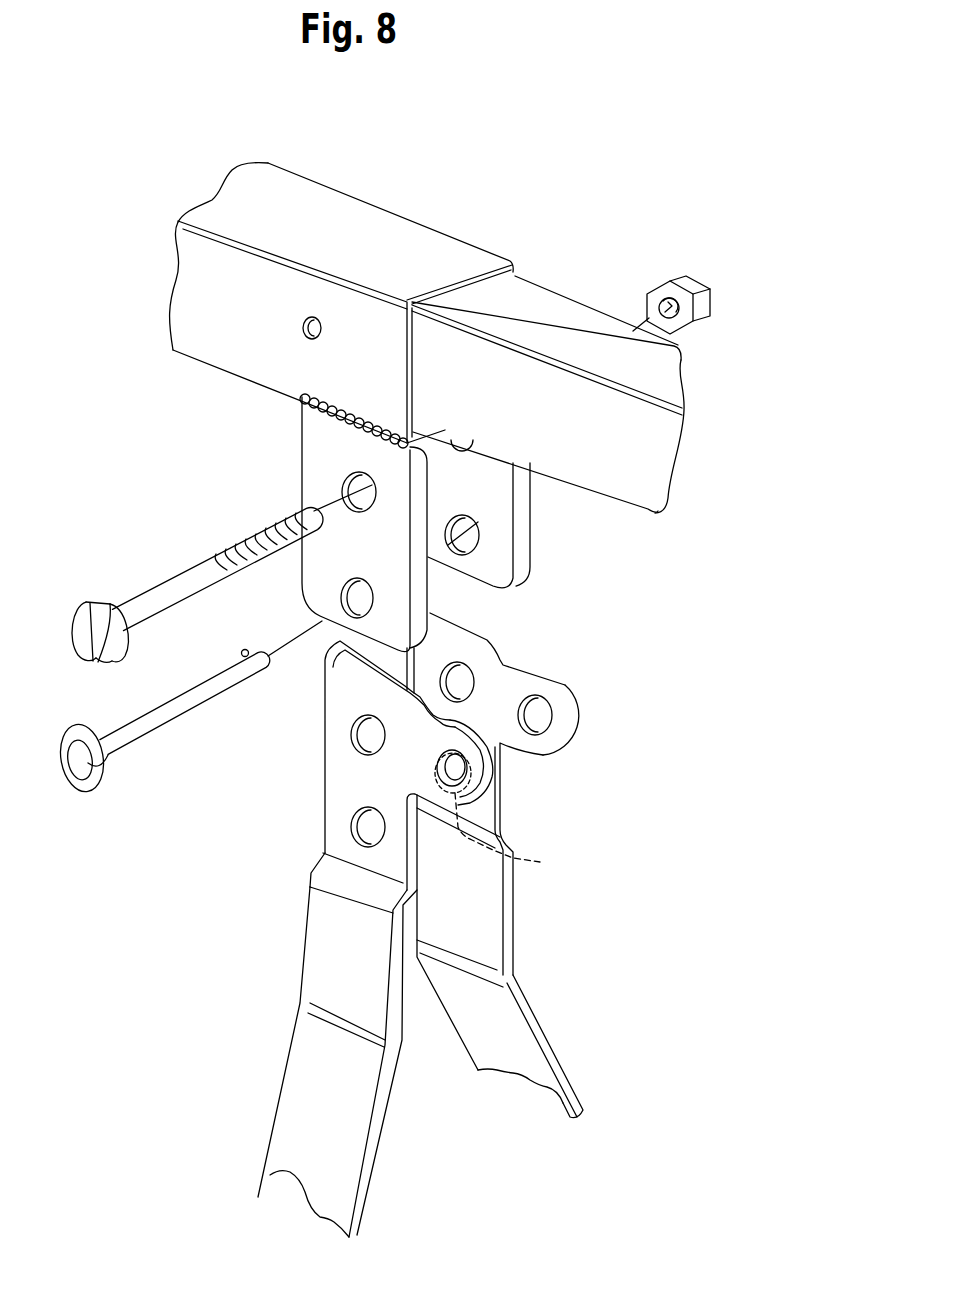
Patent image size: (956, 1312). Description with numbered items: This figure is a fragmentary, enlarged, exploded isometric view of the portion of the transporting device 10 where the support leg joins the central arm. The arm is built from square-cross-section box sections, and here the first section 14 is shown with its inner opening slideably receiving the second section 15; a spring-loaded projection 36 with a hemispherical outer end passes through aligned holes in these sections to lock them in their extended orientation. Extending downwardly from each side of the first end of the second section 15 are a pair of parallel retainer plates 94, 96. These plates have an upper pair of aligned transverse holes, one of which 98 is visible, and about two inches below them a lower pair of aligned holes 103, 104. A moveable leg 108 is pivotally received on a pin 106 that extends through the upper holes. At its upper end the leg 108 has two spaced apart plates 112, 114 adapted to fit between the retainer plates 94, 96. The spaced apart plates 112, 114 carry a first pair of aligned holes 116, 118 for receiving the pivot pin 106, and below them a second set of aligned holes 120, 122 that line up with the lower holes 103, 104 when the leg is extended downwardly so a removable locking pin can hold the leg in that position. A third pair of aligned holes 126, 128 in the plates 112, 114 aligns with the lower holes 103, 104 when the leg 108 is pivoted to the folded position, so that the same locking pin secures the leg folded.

The transporting device 10 is at (361, 185).
The first section 14 is at (240, 348).
The second section 15 is at (566, 297).
The projection 36 is at (305, 332).
The retainer plate 94 is at (310, 557).
The retainer plate 96 is at (522, 562).
The upper hole 98 is at (341, 490).
The lower hole 103 is at (320, 622).
The lower hole 104 is at (482, 540).
The pivot pin 106 is at (87, 603).
The moveable leg 108 is at (291, 951).
The spaced apart plate 112 is at (343, 790).
The spaced apart plate 114 is at (502, 797).
The first hole 116 is at (363, 743).
The first hole 118 is at (473, 677).
The second hole 120 is at (340, 836).
The second hole 122 is at (540, 862).
The third hole 126 is at (462, 770).
The third hole 128 is at (560, 738).